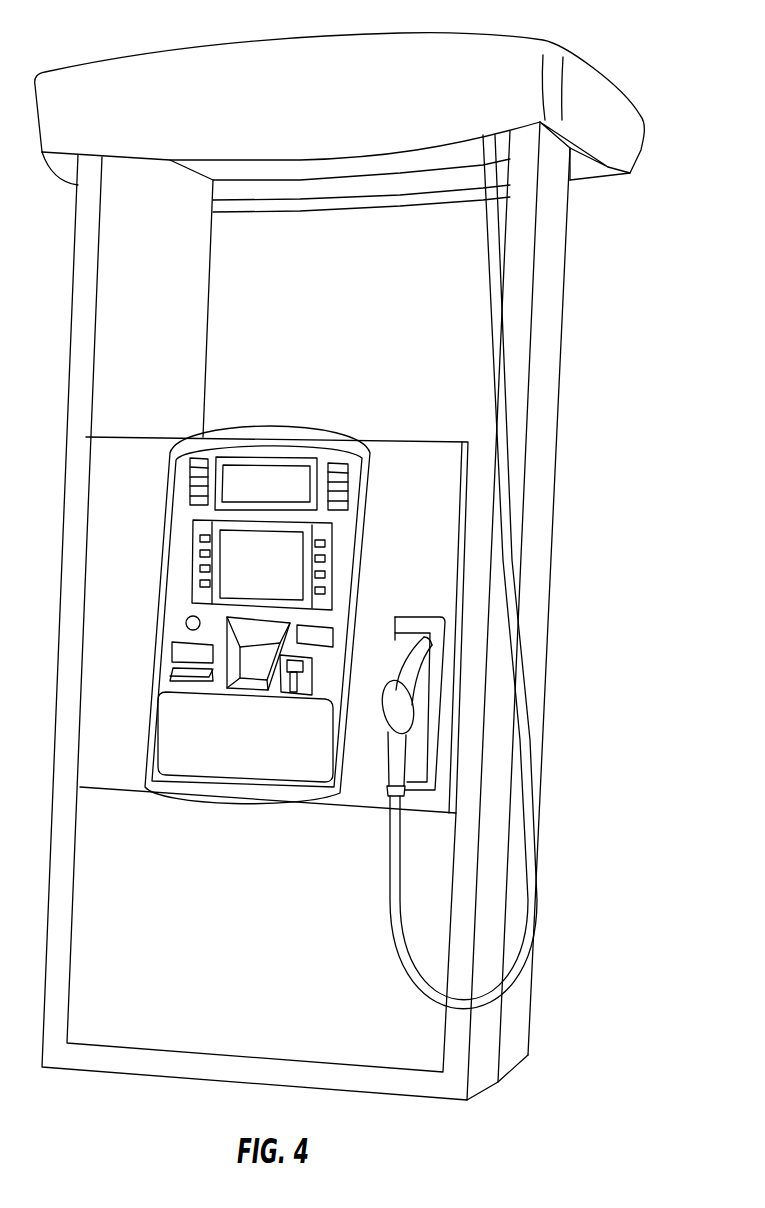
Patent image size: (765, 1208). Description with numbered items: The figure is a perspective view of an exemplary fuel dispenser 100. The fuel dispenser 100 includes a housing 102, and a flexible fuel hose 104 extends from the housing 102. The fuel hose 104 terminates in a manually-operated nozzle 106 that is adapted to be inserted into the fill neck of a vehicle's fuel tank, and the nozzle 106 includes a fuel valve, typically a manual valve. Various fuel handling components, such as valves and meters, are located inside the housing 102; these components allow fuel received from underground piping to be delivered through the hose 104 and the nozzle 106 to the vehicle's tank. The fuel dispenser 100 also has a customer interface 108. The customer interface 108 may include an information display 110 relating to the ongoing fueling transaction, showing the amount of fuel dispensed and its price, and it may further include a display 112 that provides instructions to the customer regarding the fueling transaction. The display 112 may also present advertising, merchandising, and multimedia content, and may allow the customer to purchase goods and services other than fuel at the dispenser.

The fuel dispenser 100 is at (662, 84).
The housing 102 is at (558, 462).
The flexible fuel hose 104 is at (513, 611).
The manually-operated nozzle 106 is at (398, 772).
The customer interface 108 is at (258, 423).
The information display 110 is at (284, 455).
The display 112 is at (298, 546).